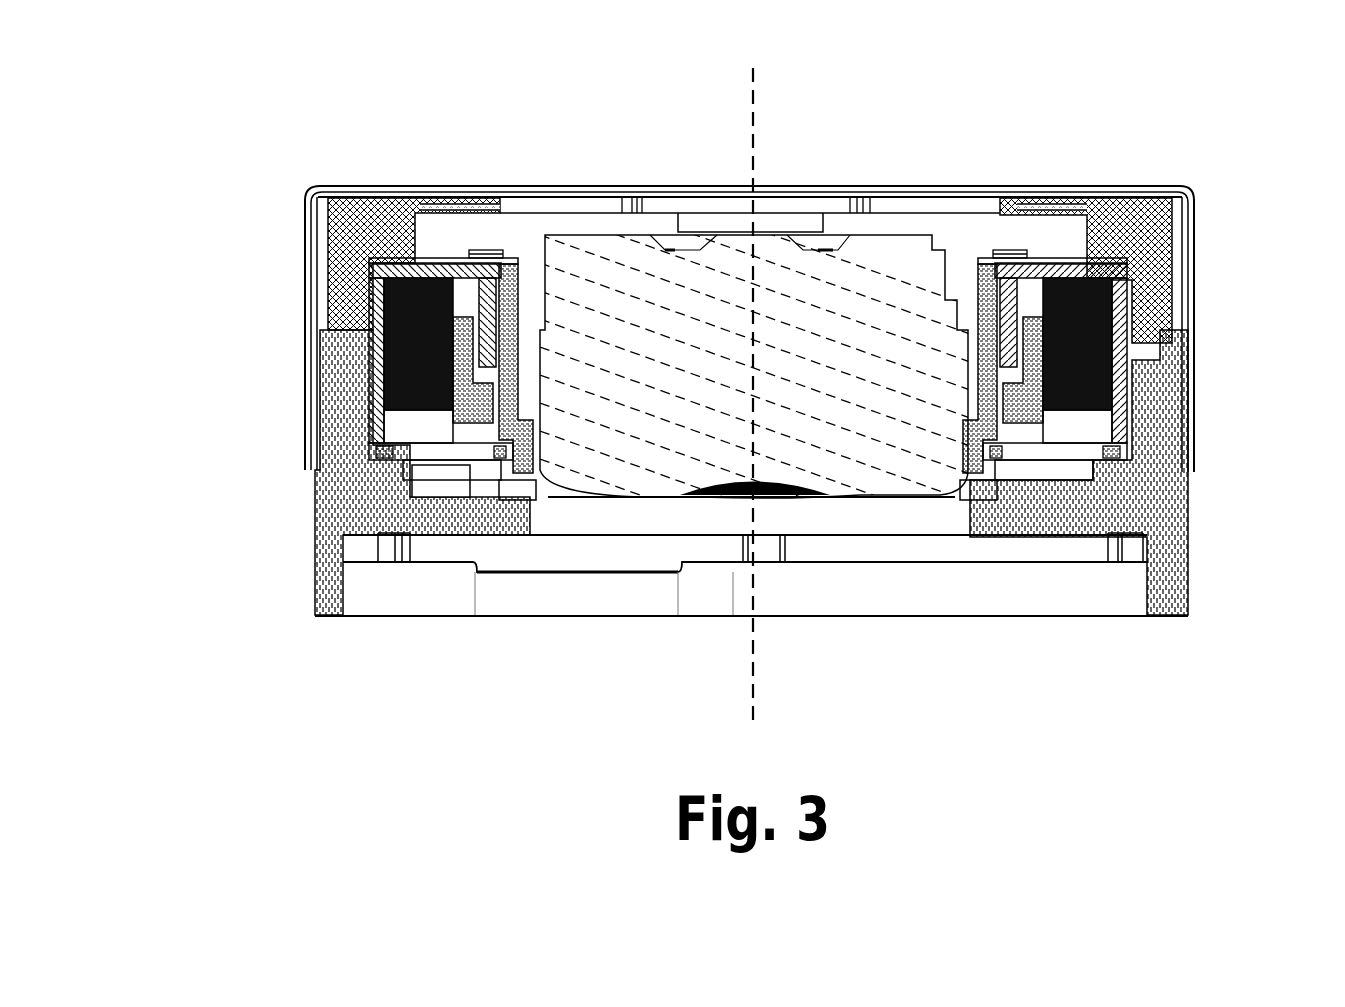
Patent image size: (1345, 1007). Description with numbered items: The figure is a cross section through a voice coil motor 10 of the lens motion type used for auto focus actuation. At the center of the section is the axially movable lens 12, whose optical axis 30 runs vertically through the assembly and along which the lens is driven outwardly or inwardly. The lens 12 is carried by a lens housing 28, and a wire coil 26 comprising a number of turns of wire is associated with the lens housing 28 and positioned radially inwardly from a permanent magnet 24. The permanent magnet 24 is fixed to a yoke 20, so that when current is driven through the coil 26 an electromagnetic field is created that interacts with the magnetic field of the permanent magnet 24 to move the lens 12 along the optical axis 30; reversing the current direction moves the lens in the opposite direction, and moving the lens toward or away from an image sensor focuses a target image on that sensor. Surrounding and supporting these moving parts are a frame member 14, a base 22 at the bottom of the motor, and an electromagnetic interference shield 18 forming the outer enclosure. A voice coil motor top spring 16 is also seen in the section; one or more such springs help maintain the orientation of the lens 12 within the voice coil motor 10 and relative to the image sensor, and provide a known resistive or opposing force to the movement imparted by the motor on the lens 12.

The voice coil motor 10 is at (290, 415).
The lens 12 is at (588, 245).
The frame member 14 is at (1167, 203).
The voice coil motor top spring 16 is at (1103, 253).
The electromagnetic interference shield 18 is at (302, 284).
The yoke 20 is at (1130, 287).
The base 22 is at (1167, 527).
The permanent magnet 24 is at (1090, 415).
The wire coil 26 is at (1035, 335).
The lens housing 28 is at (985, 272).
The optical axis 30 is at (726, 389).